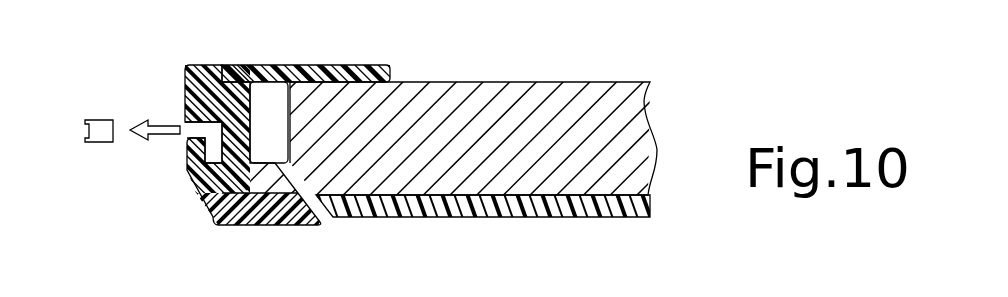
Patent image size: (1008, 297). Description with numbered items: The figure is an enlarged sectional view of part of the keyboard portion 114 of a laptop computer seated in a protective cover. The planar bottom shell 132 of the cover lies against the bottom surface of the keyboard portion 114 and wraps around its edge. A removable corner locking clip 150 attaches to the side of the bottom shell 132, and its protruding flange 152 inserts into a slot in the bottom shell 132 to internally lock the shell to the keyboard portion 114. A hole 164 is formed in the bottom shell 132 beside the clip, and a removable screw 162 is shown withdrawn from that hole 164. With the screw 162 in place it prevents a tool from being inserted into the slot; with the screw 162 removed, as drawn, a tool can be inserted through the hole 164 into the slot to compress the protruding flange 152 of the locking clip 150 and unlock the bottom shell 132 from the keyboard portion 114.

The keyboard portion 114 is at (535, 123).
The bottom shell 132 is at (512, 210).
The corner locking clip 150 is at (280, 72).
The protruding flange 152 is at (188, 195).
The removable screw 162 is at (98, 128).
The hole 164 is at (183, 137).